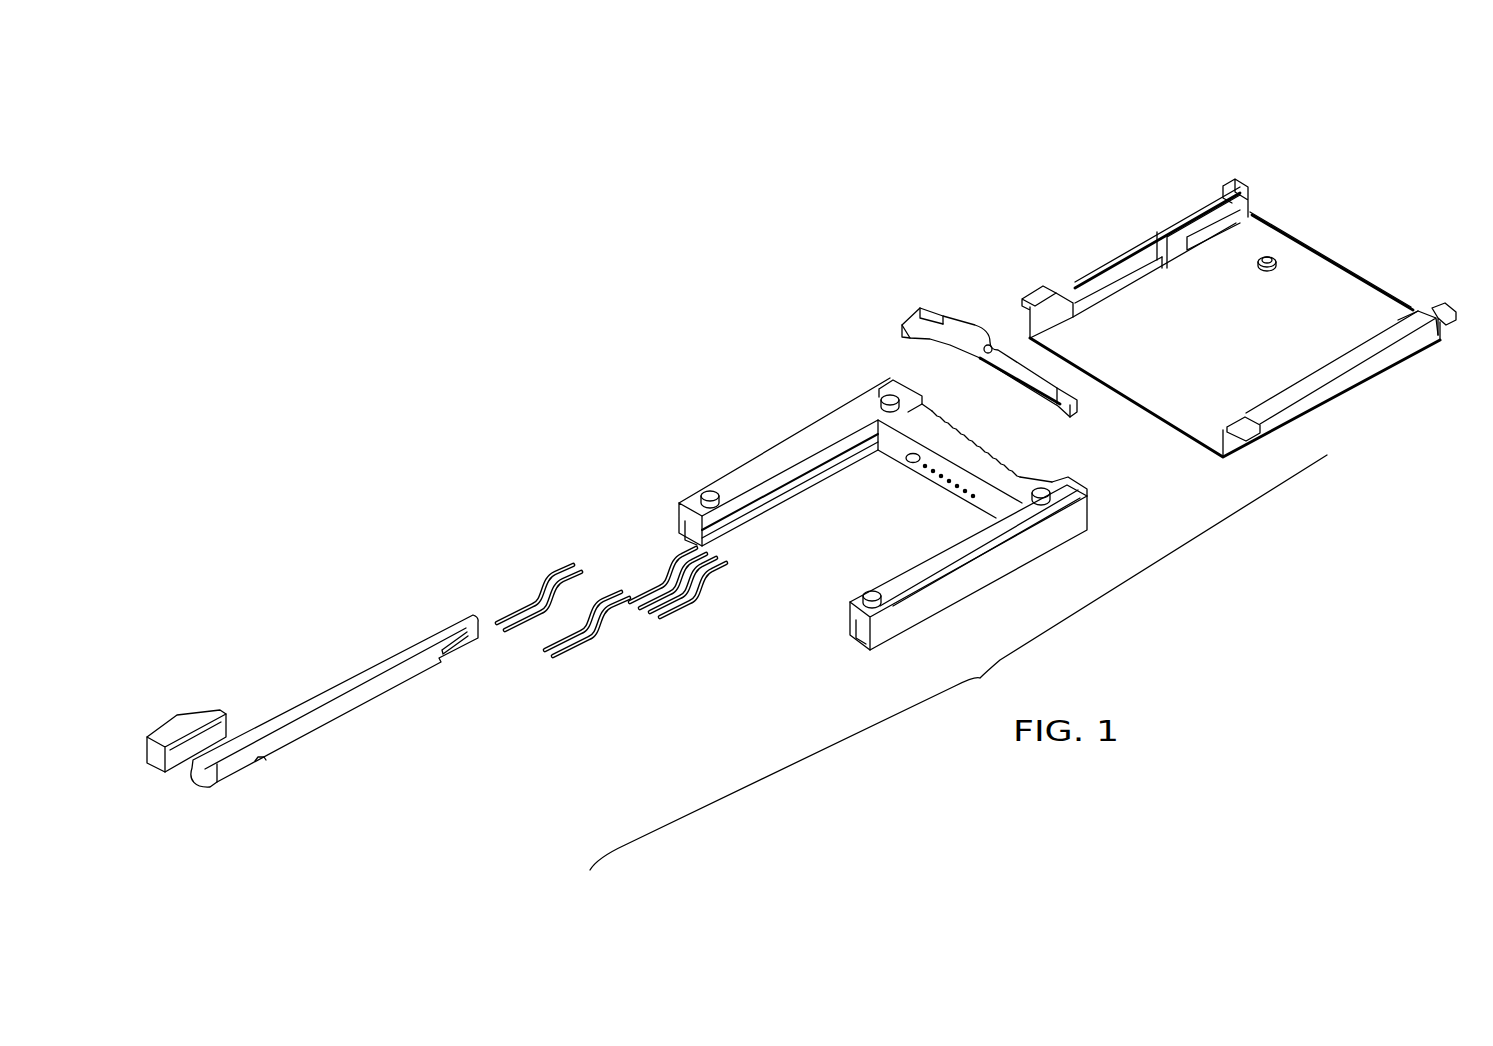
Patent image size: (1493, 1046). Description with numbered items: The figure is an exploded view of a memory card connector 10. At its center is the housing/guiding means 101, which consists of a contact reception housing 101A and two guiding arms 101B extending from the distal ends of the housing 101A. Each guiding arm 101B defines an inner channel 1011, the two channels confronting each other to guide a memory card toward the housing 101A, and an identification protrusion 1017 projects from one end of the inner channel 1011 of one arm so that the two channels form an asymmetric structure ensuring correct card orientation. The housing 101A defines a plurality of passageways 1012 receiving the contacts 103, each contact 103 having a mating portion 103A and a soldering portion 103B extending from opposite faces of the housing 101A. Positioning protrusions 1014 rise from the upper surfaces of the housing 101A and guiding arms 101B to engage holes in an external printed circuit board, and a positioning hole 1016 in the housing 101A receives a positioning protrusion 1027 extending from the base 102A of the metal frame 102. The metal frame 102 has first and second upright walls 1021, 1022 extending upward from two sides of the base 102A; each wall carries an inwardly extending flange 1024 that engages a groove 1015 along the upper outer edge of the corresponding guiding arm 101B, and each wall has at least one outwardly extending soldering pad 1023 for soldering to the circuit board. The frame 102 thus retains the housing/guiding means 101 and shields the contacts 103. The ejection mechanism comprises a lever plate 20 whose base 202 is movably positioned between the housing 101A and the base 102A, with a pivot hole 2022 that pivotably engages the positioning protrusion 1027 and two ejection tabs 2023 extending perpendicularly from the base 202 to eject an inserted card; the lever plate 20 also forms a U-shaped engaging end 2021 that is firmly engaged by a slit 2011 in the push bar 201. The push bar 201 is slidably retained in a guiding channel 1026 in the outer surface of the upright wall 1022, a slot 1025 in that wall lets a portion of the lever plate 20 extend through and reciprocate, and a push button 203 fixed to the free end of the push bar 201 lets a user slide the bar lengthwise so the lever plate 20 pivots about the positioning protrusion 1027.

The card connector 10 is at (513, 398).
The housing/guiding means 101 is at (712, 378).
The contact reception housing 101A is at (1017, 483).
The guiding arms 101B is at (802, 437).
The inner channel 1011 is at (762, 495).
The passageways 1012 is at (932, 474).
The positioning protrusions 1014 is at (705, 493).
The groove 1015 is at (919, 584).
The positioning hole 1016 is at (907, 459).
The identification protrusion 1017 is at (863, 437).
The metal frame 102 is at (1073, 180).
The base 102A is at (1333, 357).
The first upright wall 1021 is at (1307, 397).
The second upright wall 1022 is at (1053, 317).
The soldering pad 1023 is at (1235, 178).
The flange 1024 is at (1400, 327).
The slot 1025 is at (1213, 227).
The guiding channel 1026 is at (1083, 228).
The positioning protrusion 1027 is at (1268, 256).
The contacts 103 is at (540, 545).
The mating portion 103A is at (653, 617).
The soldering portion 103B is at (728, 567).
The lever plate 20 is at (895, 306).
The push bar 201 is at (380, 667).
The slit 2011 is at (460, 620).
The base 202 is at (993, 353).
The hook end of lever 2021 is at (910, 337).
The pivot hole 2022 is at (983, 345).
The ejection tabs 2023 is at (1050, 407).
The push button 203 is at (207, 707).